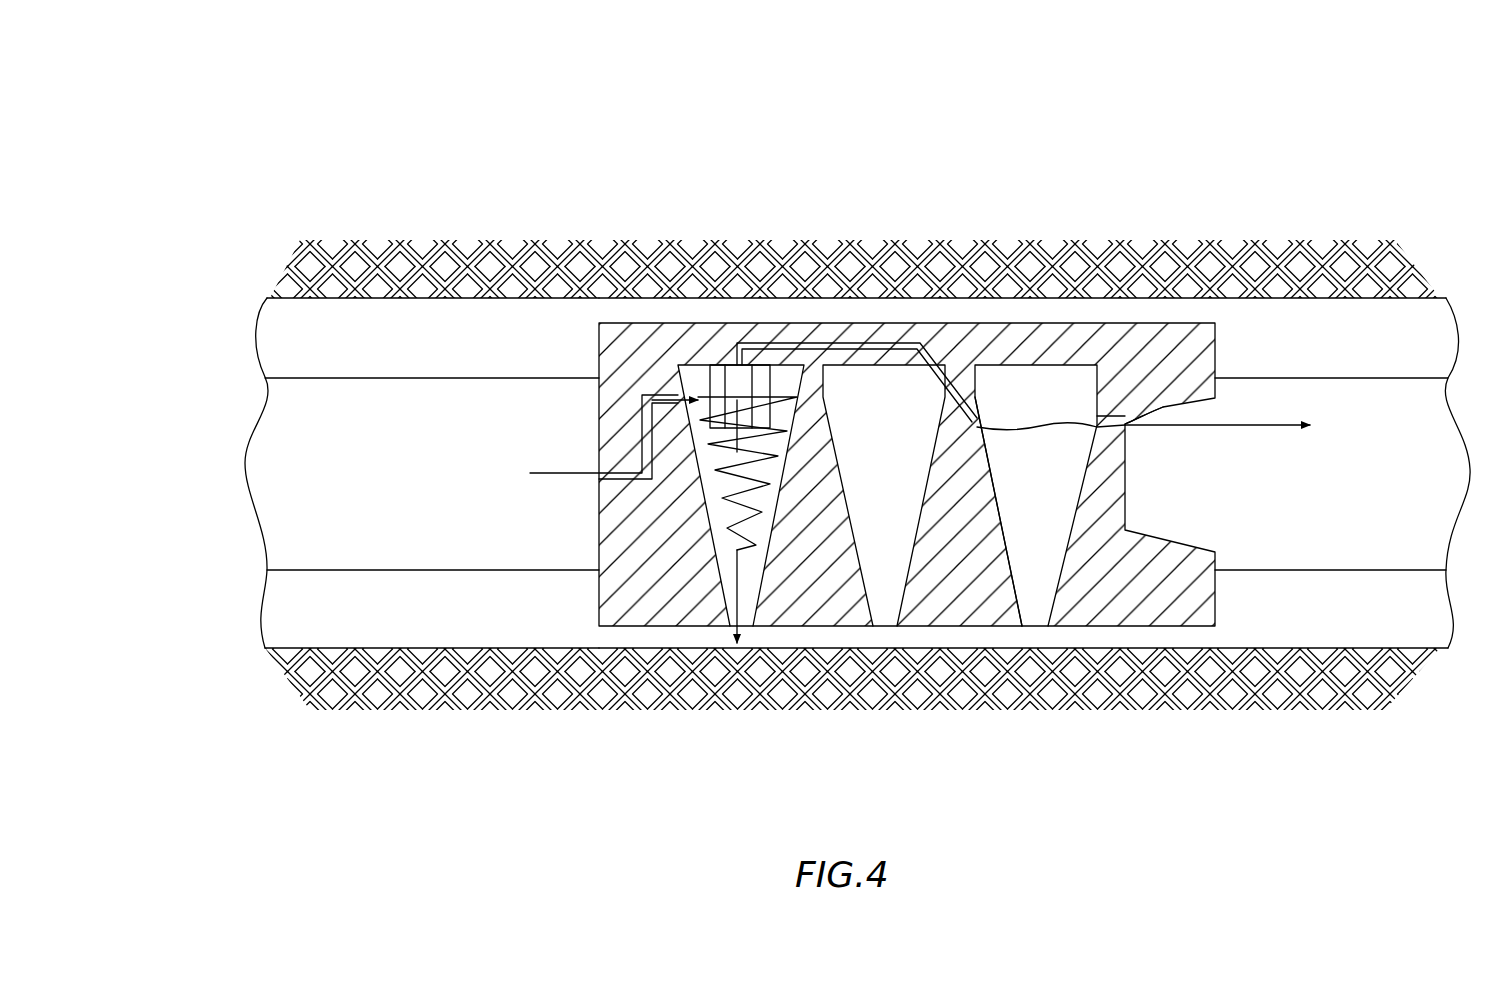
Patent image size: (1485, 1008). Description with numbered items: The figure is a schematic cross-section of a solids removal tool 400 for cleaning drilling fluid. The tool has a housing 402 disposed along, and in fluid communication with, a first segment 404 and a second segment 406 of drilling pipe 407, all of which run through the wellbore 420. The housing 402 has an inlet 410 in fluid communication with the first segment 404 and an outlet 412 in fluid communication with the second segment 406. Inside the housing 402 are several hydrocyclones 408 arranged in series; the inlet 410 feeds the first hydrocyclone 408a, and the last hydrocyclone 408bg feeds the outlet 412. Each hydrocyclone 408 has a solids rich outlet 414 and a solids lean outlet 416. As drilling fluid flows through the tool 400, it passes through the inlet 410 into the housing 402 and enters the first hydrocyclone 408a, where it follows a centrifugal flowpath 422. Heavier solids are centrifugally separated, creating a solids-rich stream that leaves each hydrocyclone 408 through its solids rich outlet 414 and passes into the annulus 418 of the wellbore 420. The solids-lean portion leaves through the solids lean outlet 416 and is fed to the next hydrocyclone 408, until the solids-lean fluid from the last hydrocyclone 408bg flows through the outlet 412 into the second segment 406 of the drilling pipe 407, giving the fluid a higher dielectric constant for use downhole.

The solids removal tool 400 is at (910, 426).
The housing 402 is at (1003, 345).
The first segment of drilling pipe 404 is at (440, 548).
The second segment of drilling pipe 406 is at (1314, 545).
The drilling pipe 407 is at (245, 405).
The hydrocyclone 408 is at (793, 620).
The first hydrocyclone 408a is at (665, 592).
The cavity bottom gap 408bg is at (1045, 585).
The inlet 410 is at (613, 470).
The outlet 412 is at (1167, 405).
The solids rich outlet 414 is at (1010, 573).
The solids lean outlet 416 is at (966, 362).
The annulus 418 is at (700, 640).
The wellbore 420 is at (317, 610).
The centrifugal flowpath 422 is at (735, 372).